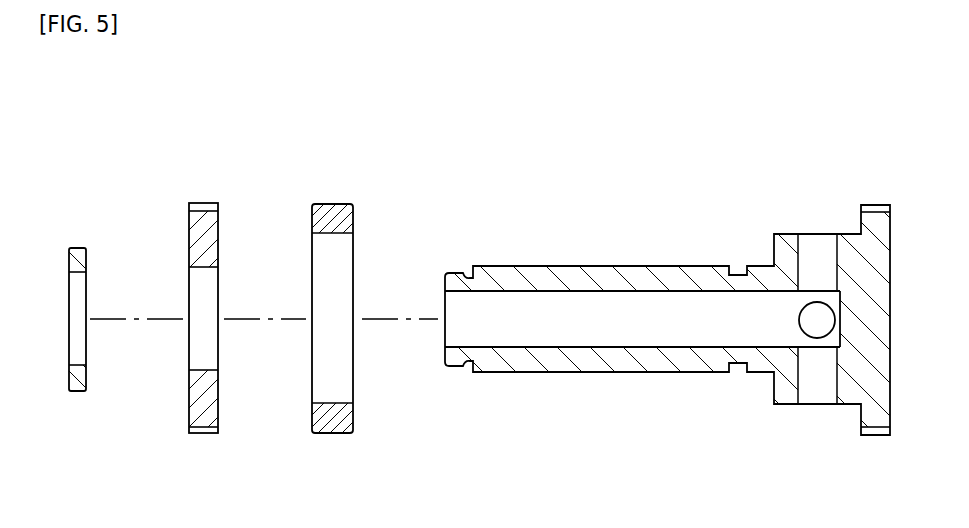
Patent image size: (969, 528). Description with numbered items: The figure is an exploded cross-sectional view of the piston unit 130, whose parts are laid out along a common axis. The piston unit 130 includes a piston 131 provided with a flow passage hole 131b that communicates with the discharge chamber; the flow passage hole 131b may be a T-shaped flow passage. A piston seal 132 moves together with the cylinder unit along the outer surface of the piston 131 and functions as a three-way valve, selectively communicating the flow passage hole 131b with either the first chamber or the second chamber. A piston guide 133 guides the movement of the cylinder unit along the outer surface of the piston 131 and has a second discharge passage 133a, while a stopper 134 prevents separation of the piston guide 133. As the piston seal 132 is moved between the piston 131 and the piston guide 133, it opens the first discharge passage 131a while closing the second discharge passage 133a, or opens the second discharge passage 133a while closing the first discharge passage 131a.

The piston unit 130 is at (488, 103).
The piston 131 is at (630, 362).
The first discharge passage 131a is at (876, 210).
The flow passage hole 131b is at (810, 273).
The piston seal 132 is at (335, 425).
The piston guide 133 is at (203, 428).
The second discharge passage 133a is at (206, 208).
The stopper 134 is at (76, 388).